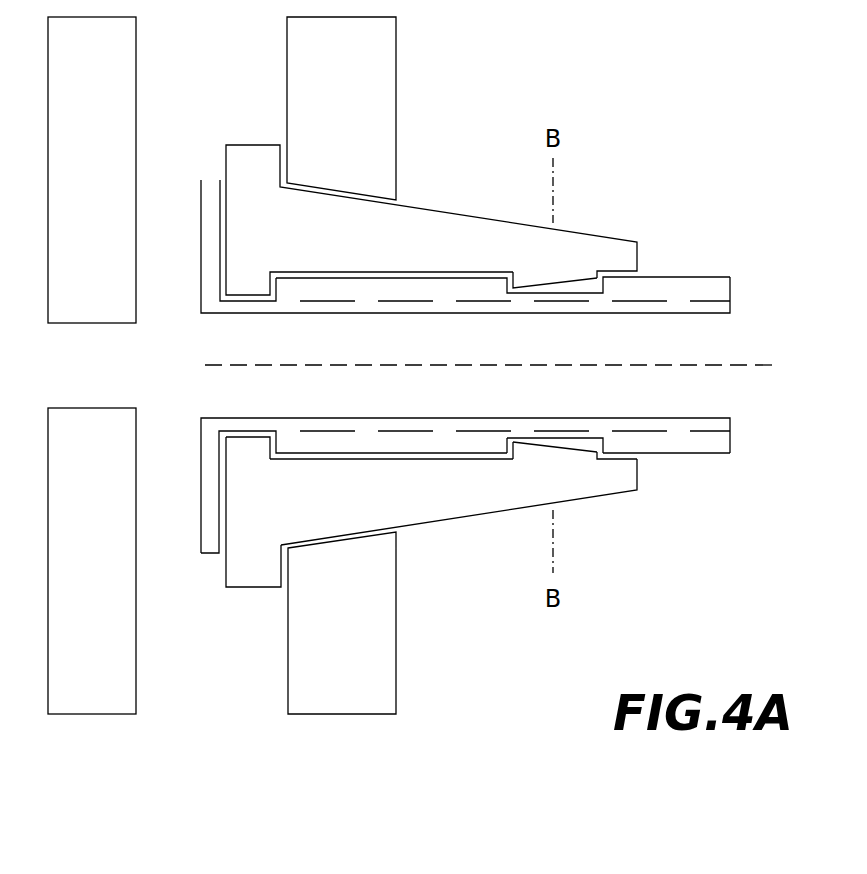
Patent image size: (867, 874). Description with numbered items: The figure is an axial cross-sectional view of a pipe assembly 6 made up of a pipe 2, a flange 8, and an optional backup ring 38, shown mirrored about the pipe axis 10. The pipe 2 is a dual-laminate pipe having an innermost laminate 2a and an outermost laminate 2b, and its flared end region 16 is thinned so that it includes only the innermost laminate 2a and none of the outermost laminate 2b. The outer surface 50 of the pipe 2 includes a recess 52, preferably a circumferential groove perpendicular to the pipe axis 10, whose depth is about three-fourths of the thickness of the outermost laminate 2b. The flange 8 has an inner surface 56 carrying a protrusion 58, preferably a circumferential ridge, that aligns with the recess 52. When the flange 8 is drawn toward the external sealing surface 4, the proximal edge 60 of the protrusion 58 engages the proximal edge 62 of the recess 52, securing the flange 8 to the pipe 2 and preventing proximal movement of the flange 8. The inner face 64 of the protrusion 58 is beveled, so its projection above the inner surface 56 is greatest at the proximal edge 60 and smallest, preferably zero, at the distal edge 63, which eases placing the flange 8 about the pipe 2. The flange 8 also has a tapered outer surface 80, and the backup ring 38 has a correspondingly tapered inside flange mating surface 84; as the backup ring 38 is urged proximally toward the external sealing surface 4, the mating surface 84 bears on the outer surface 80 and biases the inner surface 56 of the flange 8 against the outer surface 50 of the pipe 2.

The pipe 2 is at (712, 448).
The innermost laminate 2a is at (722, 307).
The outermost laminate 2b is at (722, 285).
The external sealing surface 4 is at (136, 45).
The pipe assembly 6 is at (440, 585).
The flange 8 is at (238, 570).
The pipe axis 10 is at (737, 366).
The flared end region 16 is at (193, 519).
The backup ring 38 is at (343, 705).
The outer surface 50 is at (658, 452).
The recess 52 is at (580, 440).
The inner surface 56 is at (430, 452).
The protrusion 58 is at (535, 457).
The proximal edge 60 is at (513, 445).
The proximal edge 62 is at (503, 445).
The distal edge 63 is at (605, 457).
The inner face 64 is at (571, 280).
The outer surface 80 is at (434, 208).
The inside flange mating surface 84 is at (307, 543).